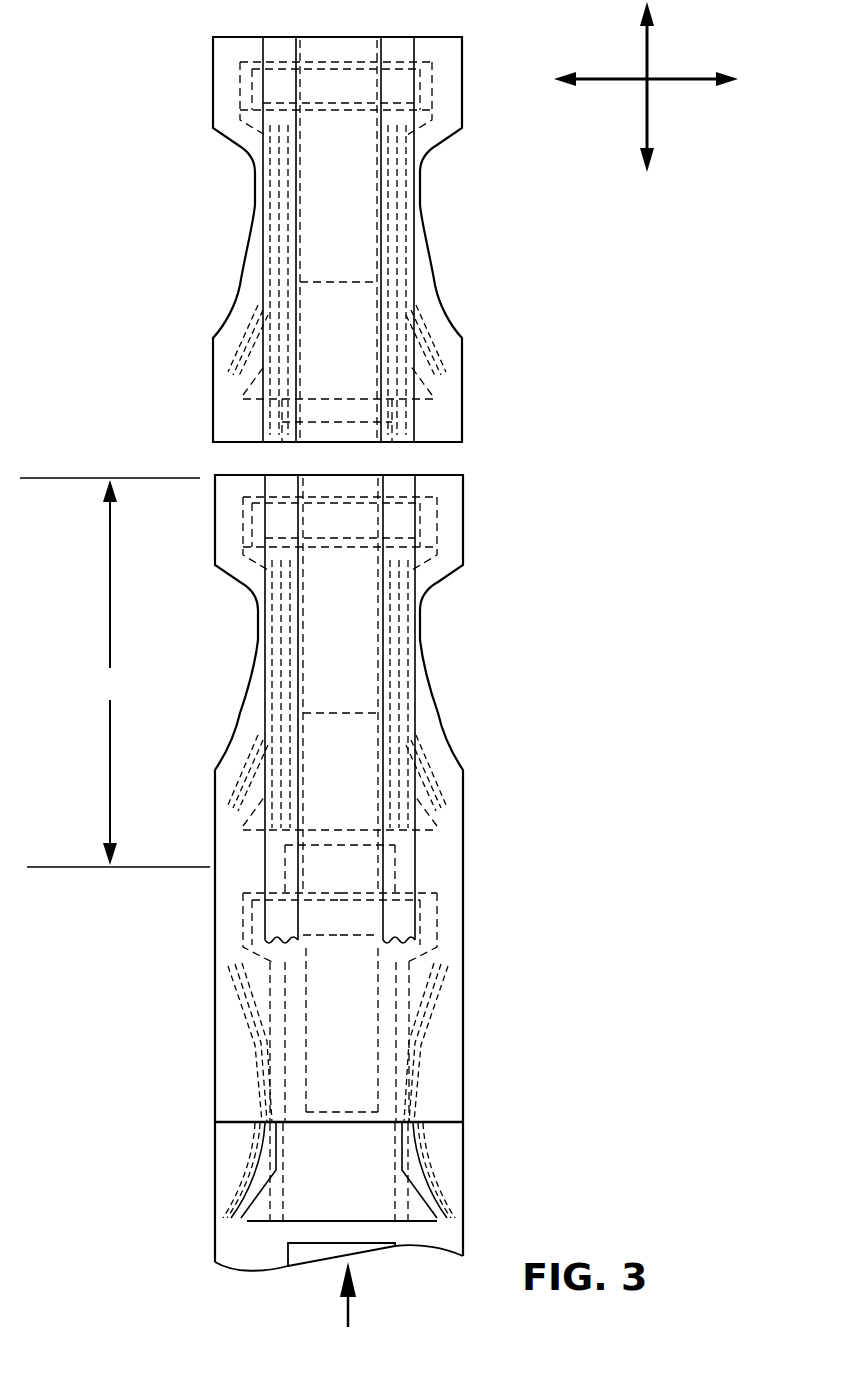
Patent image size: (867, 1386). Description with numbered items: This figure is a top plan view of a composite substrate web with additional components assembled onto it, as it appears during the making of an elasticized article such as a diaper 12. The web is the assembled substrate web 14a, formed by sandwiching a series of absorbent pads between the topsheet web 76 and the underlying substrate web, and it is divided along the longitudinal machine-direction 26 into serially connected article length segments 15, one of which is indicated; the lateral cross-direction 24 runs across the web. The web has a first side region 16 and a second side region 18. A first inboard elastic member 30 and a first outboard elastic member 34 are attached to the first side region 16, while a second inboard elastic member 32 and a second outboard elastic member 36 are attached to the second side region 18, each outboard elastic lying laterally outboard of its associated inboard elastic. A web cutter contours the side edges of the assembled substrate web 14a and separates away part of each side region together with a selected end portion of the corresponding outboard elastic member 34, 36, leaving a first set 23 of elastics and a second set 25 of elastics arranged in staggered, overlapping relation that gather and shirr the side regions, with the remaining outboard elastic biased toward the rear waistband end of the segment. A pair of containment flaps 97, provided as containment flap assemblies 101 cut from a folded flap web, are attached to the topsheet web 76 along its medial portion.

The diaper 12 is at (460, 341).
The containment flaps 97 is at (264, 202).
The topsheet web 76 is at (453, 865).
The containment flap assemblies 101 is at (268, 622).
The first side region 16 is at (232, 921).
The second side region 18 is at (453, 925).
The first set of elastics 23 is at (238, 1040).
The second set of elastics 25 is at (448, 1044).
The first outboard elastic member 34 is at (258, 1148).
The second outboard elastic member 36 is at (423, 1145).
The assembled substrate web 14a is at (462, 1167).
The first inboard elastic member 30 is at (282, 1210).
The second inboard elastic member 32 is at (406, 1210).
The article length segment 15 is at (115, 672).
The lateral cross-direction 24 is at (622, 86).
The longitudinal machine-direction 26 is at (650, 52).